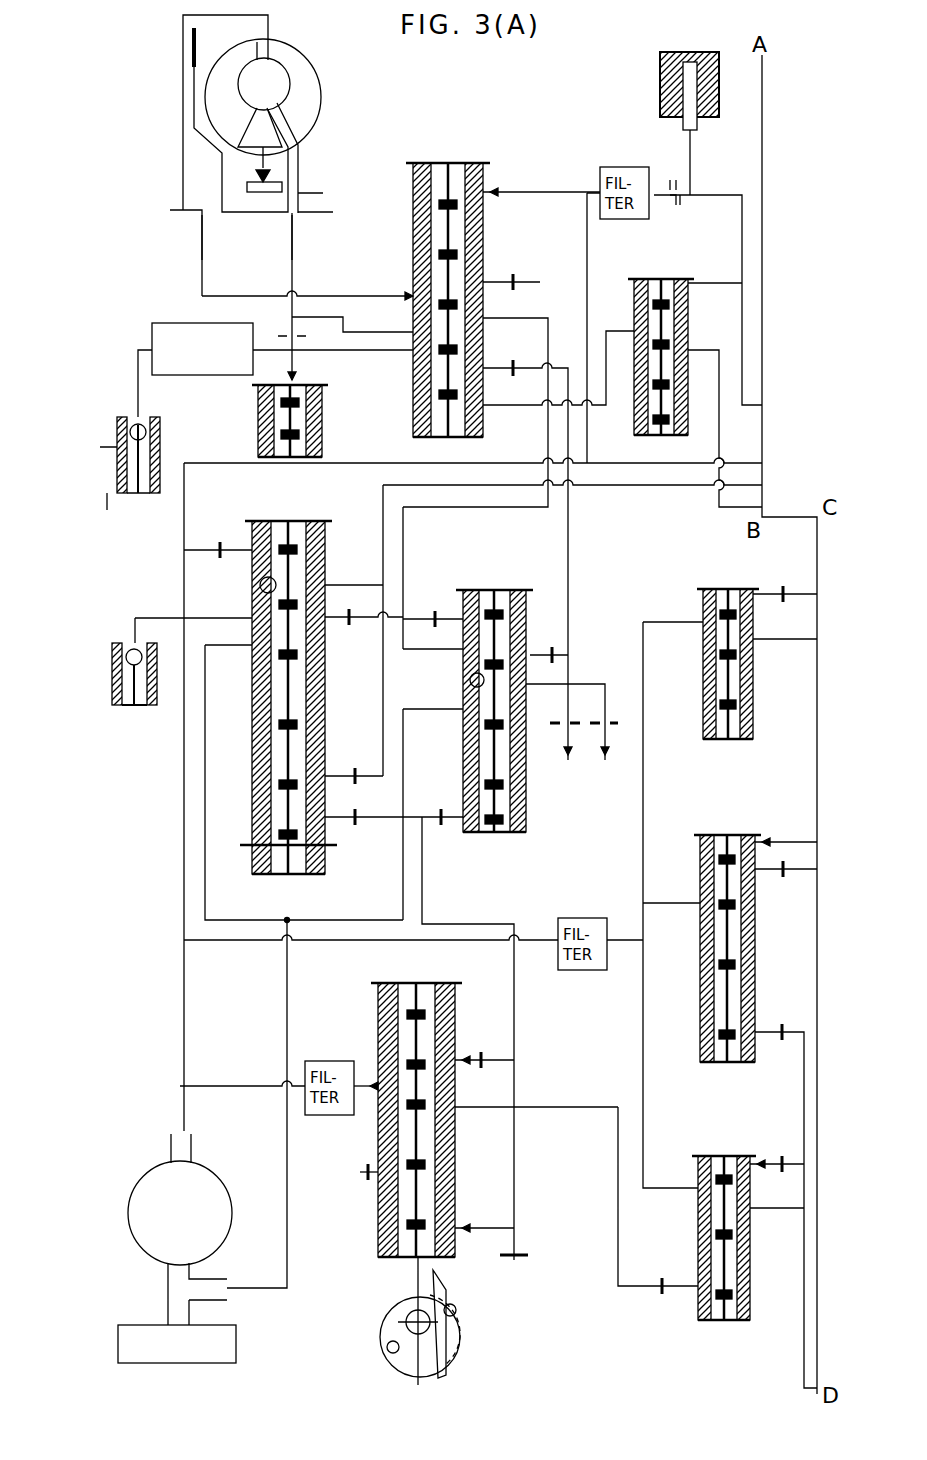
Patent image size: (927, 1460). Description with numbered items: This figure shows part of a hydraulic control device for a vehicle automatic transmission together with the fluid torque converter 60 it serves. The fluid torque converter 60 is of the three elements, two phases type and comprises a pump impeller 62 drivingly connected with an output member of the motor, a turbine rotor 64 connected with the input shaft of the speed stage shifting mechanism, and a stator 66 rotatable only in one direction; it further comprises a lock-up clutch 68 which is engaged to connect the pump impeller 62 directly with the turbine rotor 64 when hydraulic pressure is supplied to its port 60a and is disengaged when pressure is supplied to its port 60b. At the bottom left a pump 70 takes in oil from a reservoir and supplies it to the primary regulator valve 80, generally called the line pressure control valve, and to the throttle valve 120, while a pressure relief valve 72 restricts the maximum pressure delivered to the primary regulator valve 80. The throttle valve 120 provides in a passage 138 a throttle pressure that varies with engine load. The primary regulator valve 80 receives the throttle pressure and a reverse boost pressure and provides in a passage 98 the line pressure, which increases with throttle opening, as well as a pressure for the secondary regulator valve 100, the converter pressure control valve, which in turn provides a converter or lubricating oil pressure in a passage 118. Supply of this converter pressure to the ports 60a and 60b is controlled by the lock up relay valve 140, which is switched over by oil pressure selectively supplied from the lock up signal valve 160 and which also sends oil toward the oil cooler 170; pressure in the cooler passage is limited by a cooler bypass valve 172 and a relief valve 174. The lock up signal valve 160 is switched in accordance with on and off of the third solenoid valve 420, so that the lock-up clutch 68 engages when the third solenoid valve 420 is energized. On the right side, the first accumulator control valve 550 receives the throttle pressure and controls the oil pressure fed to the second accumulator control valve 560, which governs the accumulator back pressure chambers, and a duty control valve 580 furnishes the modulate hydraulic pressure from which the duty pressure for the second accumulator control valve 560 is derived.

The fluid torque converter 60 is at (322, 88).
The pump impeller 62 is at (298, 50).
The turbine rotor 64 is at (215, 97).
The stator 66 is at (270, 133).
The lock-up clutch 68 is at (192, 46).
The port 60a is at (300, 228).
The port 60b is at (198, 230).
The pump 70 is at (162, 1175).
The pressure relief valve 72 is at (128, 712).
The primary regulator valve 80 is at (302, 880).
The passage 98 is at (185, 527).
The secondary regulator valve 100 is at (480, 843).
The passage 118 is at (532, 656).
The throttle valve 120 is at (384, 1258).
The passage 138 is at (492, 1107).
The lock up relay valve 140 is at (463, 443).
The lock up signal valve 160 is at (655, 437).
The oil cooler 170 is at (176, 323).
The cooler bypass valve 172 is at (258, 437).
The relief valve 174 is at (117, 449).
The third solenoid valve 420 is at (708, 135).
The first accumulator control valve 550 is at (712, 1328).
The second accumulator control valve 560 is at (732, 1065).
The duty control valve 580 is at (732, 745).